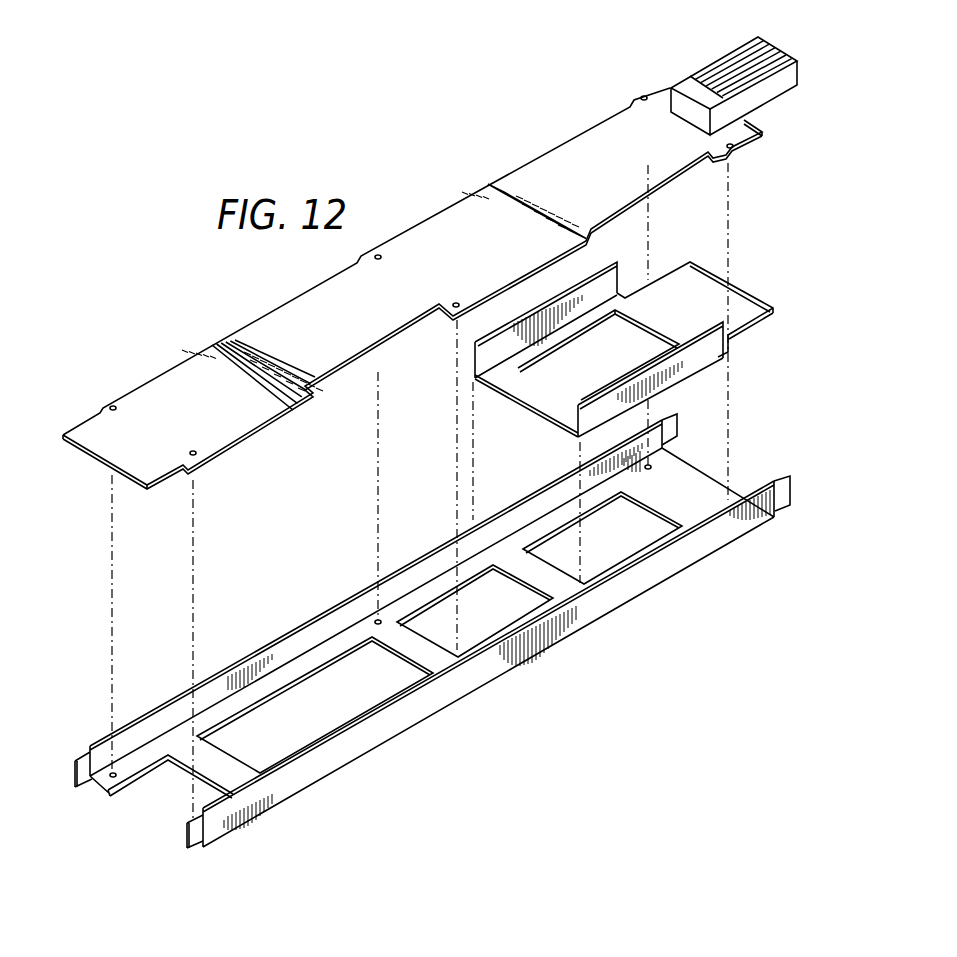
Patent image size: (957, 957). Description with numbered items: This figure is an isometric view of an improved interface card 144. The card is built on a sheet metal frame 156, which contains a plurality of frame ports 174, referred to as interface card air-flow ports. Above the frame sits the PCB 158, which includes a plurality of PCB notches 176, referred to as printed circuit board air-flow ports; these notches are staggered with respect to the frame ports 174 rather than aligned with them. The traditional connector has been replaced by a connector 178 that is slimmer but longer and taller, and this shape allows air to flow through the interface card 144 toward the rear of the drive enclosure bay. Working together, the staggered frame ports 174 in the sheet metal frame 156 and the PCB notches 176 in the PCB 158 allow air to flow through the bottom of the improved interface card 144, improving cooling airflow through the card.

The improved interface card 144 is at (600, 649).
The sheet metal frame 156 is at (432, 631).
The PCB 158 is at (427, 236).
The frame ports 174 is at (532, 588).
The PCB notches 176 is at (571, 150).
The connector 178 is at (772, 52).